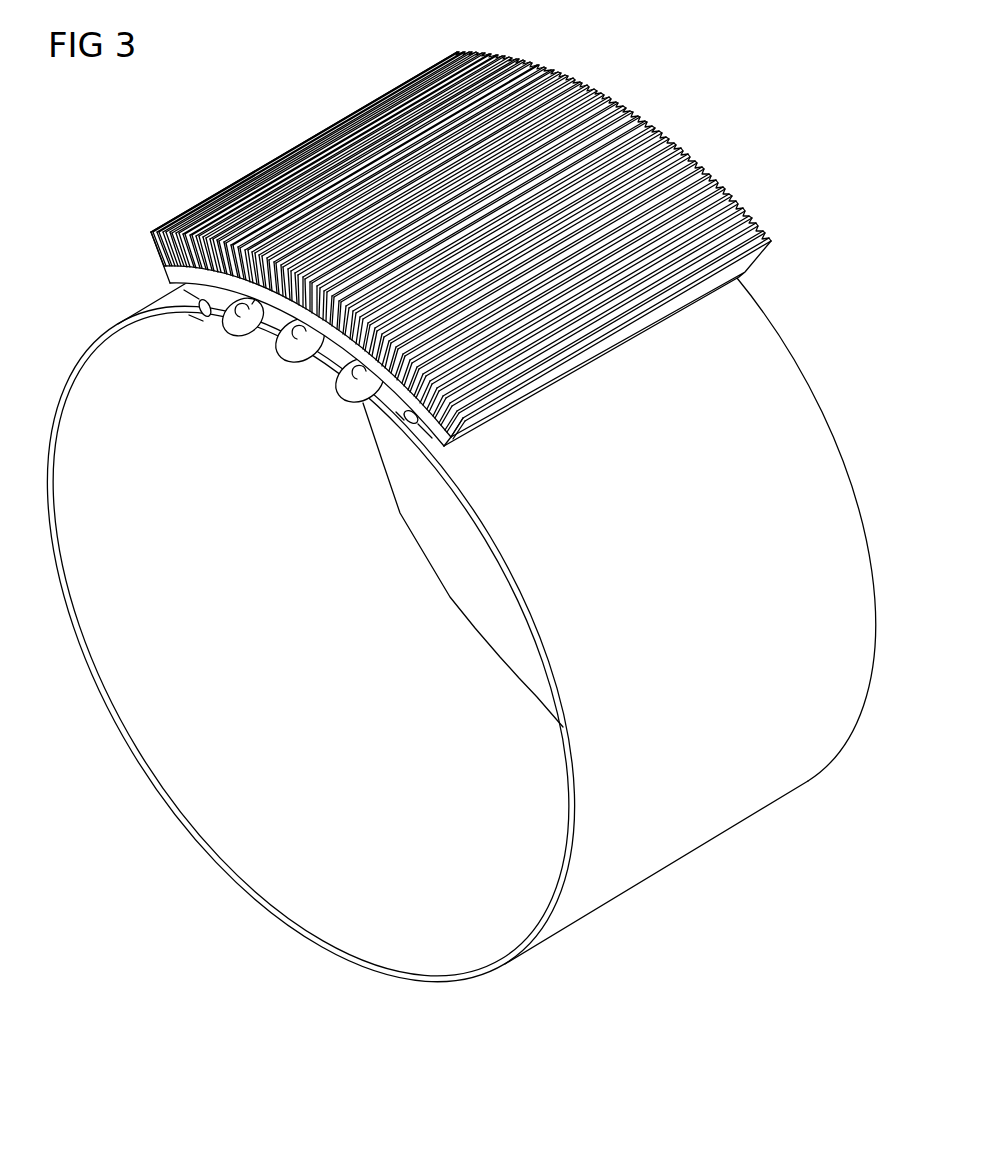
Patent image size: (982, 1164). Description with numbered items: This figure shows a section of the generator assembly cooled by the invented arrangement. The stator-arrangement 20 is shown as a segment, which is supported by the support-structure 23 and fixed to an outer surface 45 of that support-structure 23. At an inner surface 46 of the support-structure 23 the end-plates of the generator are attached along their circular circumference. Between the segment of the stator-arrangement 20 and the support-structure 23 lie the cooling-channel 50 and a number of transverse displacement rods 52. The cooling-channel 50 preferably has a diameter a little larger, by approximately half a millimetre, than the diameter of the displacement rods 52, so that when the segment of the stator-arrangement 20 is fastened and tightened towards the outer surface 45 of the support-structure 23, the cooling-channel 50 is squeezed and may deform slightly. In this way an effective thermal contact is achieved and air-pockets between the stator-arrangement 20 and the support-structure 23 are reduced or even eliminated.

The stator-arrangement 20 is at (340, 166).
The support-structure 23 is at (800, 328).
The outer surface 45 is at (708, 820).
The inner surface 46 is at (150, 712).
The cooling-channel 50 is at (234, 322).
The transverse displacement rods 52 is at (177, 297).